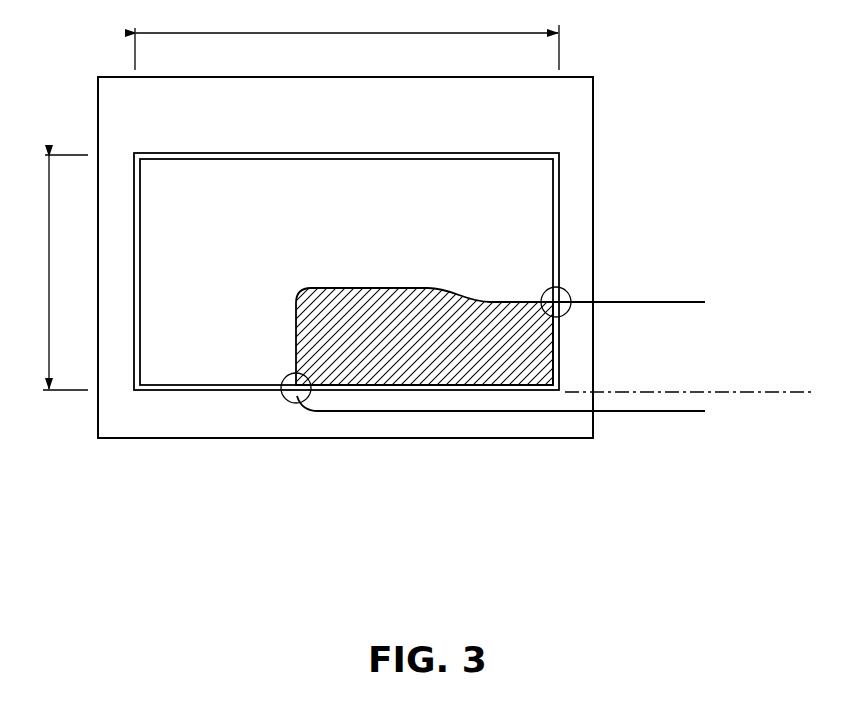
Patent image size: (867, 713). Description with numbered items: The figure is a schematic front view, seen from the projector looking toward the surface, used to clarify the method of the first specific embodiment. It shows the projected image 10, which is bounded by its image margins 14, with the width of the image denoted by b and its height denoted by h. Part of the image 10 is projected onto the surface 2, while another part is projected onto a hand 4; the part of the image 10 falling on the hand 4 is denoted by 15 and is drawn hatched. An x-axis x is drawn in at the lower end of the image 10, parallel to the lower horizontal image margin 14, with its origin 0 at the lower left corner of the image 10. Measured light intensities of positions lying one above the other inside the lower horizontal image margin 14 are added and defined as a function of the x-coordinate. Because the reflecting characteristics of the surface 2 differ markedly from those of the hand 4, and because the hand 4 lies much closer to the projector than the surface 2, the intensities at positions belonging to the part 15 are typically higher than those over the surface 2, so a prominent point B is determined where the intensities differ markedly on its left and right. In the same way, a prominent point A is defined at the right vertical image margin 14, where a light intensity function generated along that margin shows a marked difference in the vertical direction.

The surface 2 is at (576, 113).
The hand 4 is at (651, 375).
The projected image 10 is at (268, 178).
The image margin 14 is at (135, 171).
The part of image projected onto hand 15 is at (425, 370).
The origin 0 is at (134, 391).
The prominent point A is at (566, 290).
The prominent point B is at (285, 402).
The width of image b is at (347, 38).
The height of image h is at (57, 272).
The x-axis x is at (708, 393).